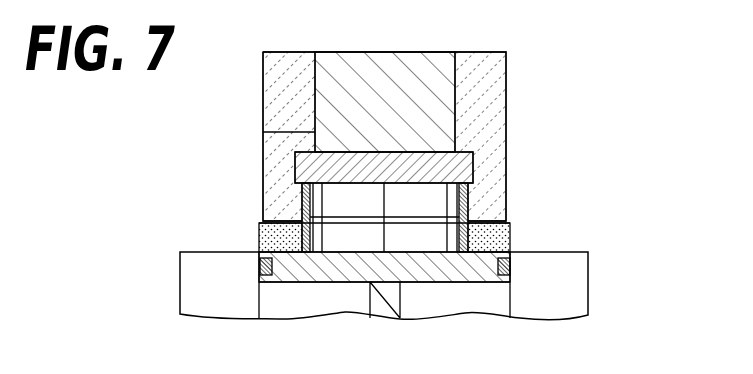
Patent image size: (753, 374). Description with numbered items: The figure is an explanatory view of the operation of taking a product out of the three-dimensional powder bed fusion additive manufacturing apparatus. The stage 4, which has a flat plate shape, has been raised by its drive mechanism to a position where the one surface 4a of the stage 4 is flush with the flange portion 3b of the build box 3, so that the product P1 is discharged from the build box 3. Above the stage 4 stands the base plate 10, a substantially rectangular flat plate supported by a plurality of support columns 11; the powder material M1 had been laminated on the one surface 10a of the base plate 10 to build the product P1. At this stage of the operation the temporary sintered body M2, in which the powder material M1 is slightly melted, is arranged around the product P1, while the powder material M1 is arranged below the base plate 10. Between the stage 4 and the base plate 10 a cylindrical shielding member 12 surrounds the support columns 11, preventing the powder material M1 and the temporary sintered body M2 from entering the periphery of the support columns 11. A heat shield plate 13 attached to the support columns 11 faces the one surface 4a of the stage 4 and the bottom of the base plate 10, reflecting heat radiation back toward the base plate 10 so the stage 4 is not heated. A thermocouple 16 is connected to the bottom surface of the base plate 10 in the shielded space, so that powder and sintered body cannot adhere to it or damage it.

The build box 3 is at (588, 298).
The flange portion 3b is at (565, 245).
The stage 4 is at (477, 283).
The one surface of the stage 4a is at (259, 232).
The base plate 10 is at (473, 165).
The one surface of the base plate 10a is at (263, 132).
The support column 11 is at (300, 204).
The shielding member 12 is at (285, 225).
The heat shield plate 13 is at (348, 224).
The thermocouple 16 is at (387, 236).
The powder material M1 is at (511, 231).
The temporary sintered body M2 is at (483, 68).
The product P1 is at (411, 50).